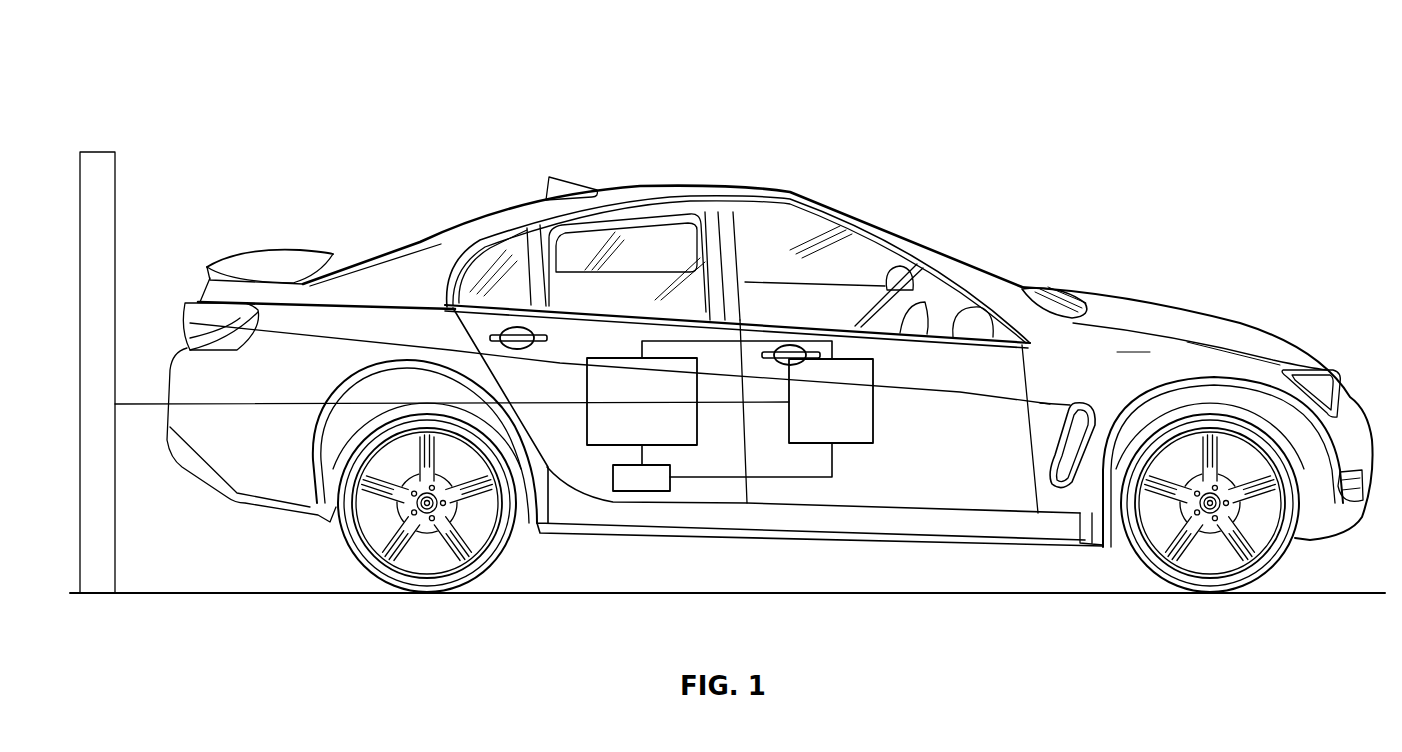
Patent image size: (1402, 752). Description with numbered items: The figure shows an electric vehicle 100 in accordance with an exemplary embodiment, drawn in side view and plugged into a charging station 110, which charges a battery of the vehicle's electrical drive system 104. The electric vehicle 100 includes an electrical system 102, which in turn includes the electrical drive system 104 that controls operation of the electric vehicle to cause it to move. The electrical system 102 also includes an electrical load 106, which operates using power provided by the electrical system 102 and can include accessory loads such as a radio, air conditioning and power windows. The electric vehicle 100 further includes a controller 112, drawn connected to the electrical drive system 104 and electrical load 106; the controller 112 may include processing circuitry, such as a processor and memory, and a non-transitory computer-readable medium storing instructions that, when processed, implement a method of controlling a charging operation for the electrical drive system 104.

The electric vehicle 100 is at (1264, 82).
The electrical system 102 is at (888, 383).
The electrical drive system 104 is at (630, 357).
The electrical load 106 is at (873, 423).
The charging station 110 is at (100, 152).
The controller 112 is at (642, 492).